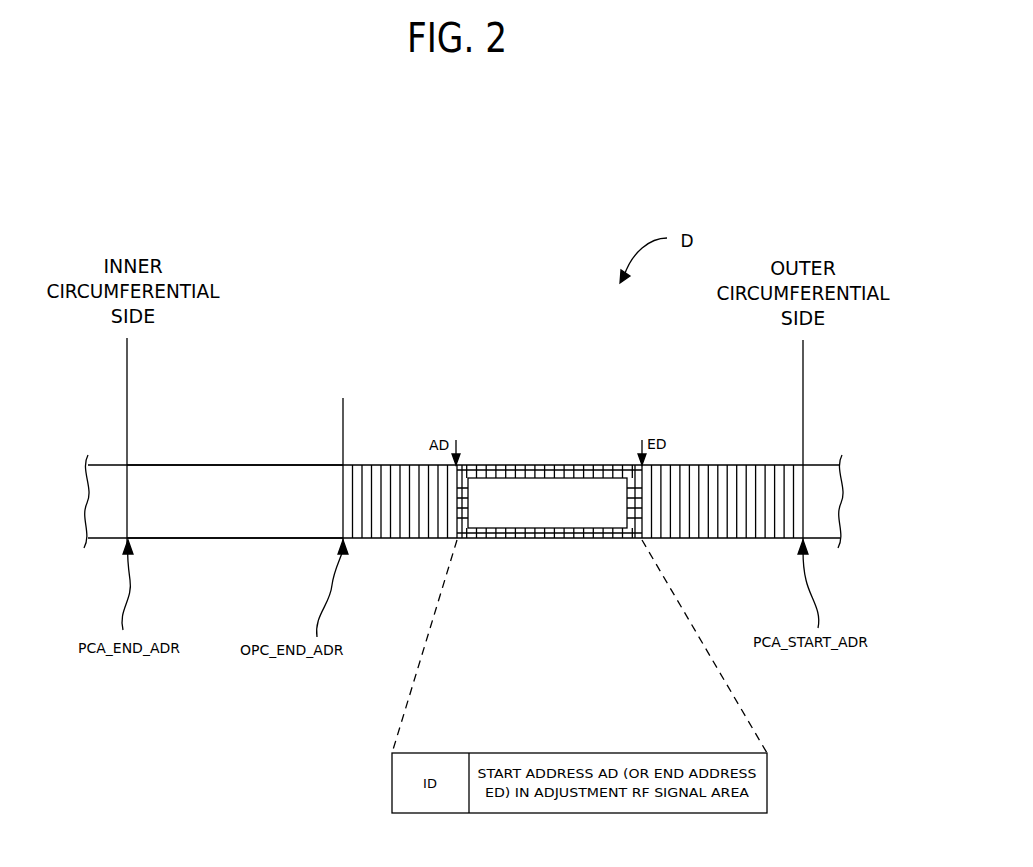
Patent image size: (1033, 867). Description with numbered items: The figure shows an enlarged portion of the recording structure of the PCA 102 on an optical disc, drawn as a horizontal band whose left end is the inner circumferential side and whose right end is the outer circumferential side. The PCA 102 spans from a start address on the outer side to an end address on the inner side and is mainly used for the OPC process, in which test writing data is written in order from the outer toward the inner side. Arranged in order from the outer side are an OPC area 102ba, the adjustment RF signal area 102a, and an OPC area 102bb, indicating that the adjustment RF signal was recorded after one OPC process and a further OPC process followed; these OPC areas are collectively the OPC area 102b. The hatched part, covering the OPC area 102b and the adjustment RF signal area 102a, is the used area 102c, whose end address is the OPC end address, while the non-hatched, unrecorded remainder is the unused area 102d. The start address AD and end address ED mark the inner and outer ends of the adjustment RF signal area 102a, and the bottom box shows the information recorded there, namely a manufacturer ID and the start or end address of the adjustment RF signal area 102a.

The PCA 102 is at (127, 368).
The adjustment RF signal area 102a is at (550, 540).
The OPC area 102b is at (573, 544).
The OPC area 102ba is at (723, 539).
The OPC area 102bb is at (400, 544).
The used area 102c is at (803, 425).
The unused area 102d is at (343, 425).